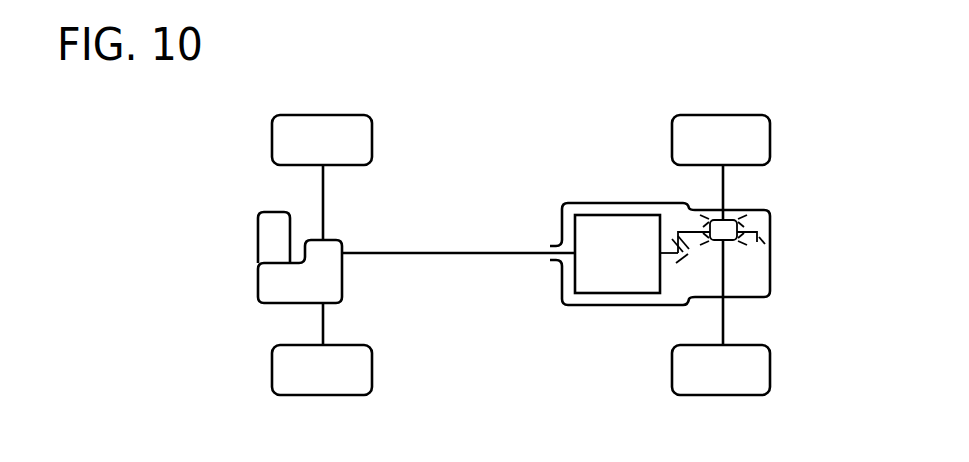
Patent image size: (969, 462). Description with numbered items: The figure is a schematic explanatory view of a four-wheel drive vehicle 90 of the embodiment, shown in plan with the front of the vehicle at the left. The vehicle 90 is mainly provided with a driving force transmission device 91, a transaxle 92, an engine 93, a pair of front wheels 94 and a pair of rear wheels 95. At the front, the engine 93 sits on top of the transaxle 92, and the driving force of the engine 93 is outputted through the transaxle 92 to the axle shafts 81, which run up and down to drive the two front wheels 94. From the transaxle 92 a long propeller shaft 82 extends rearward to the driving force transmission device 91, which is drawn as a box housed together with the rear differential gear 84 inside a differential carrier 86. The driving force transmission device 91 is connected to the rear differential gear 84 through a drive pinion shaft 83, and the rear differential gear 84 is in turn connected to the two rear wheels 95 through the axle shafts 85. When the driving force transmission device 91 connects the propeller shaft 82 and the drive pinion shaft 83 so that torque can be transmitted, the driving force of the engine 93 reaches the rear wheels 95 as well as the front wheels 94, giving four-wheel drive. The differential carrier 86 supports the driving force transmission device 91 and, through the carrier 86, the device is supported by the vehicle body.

The four-wheel drive vehicle 90 is at (585, 69).
The front wheels 94 is at (347, 255).
The axle shafts 81 is at (358, 255).
The transaxle 92 is at (272, 272).
The engine 93 is at (246, 237).
The propeller shaft 82 is at (458, 228).
The differential carrier 86 is at (660, 234).
The driving force transmission device 91 is at (617, 228).
The drive pinion shaft 83 is at (685, 267).
The rear differential gear 84 is at (748, 248).
The axle shafts 85 is at (753, 255).
The rear wheels 95 is at (747, 255).